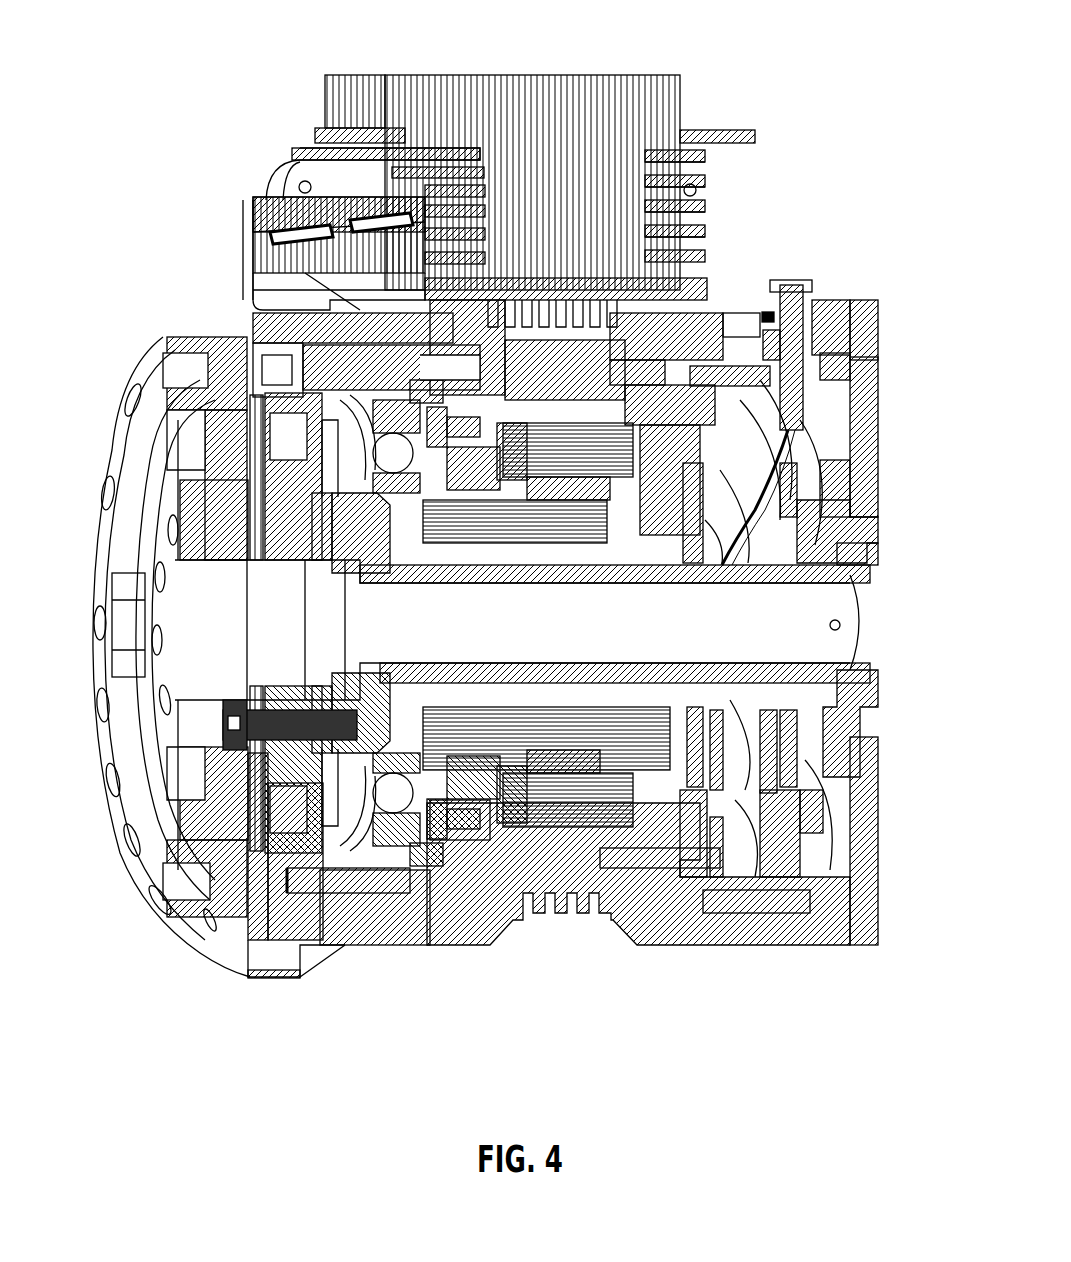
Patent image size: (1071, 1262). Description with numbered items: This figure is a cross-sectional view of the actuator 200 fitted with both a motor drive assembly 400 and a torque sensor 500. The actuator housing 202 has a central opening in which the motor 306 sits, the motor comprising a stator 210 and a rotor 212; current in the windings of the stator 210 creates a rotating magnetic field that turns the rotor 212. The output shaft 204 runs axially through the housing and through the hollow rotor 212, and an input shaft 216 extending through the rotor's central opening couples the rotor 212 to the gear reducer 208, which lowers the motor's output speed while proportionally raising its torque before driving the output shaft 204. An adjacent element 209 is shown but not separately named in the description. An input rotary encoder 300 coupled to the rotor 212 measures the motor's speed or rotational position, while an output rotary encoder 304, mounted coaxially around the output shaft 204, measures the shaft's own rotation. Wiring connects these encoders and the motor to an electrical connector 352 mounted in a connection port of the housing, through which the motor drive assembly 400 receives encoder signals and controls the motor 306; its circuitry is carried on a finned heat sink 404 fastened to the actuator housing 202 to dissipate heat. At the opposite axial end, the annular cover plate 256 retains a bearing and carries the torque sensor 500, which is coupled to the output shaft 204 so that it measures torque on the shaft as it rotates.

The actuator 200 is at (690, 58).
The actuator housing 202 is at (650, 918).
The output shaft 204 is at (862, 640).
The gear reducer 208 is at (401, 950).
The fastener 209 is at (548, 720).
The stator 210 is at (592, 460).
The rotor 212 is at (553, 492).
The input shaft 216 is at (478, 720).
The cover plate 256 is at (240, 768).
The input rotary encoder 300 is at (745, 785).
The output rotary encoder 304 is at (790, 555).
The motor 306 is at (583, 905).
The electrical connector 352 is at (805, 300).
The motor drive assembly 400 is at (566, 74).
The heat sink 404 is at (738, 288).
The torque sensor 500 is at (160, 372).